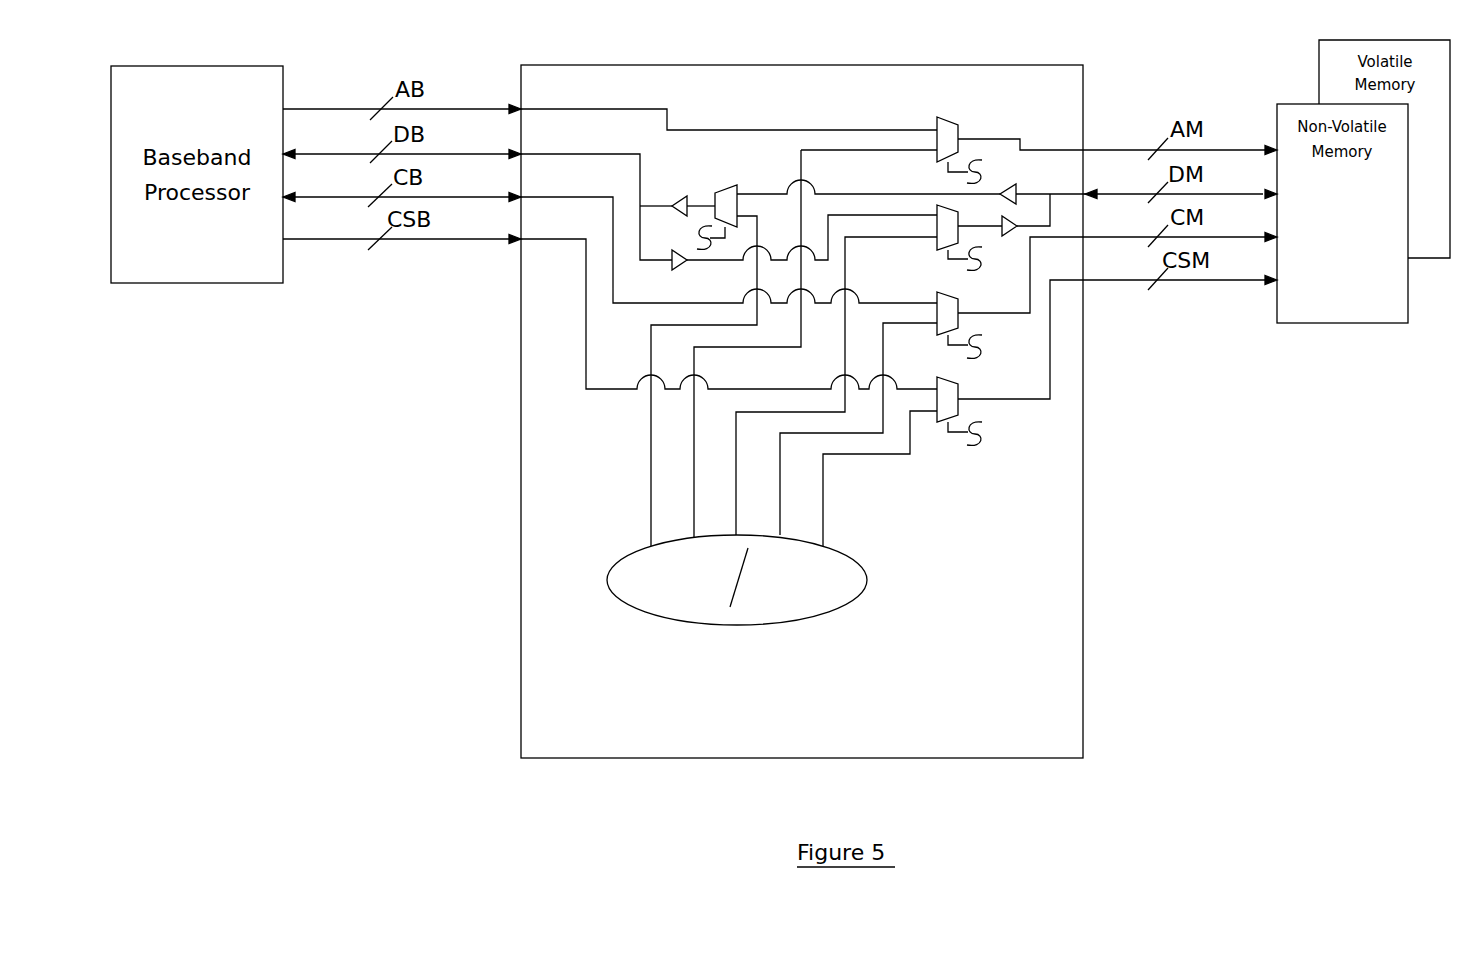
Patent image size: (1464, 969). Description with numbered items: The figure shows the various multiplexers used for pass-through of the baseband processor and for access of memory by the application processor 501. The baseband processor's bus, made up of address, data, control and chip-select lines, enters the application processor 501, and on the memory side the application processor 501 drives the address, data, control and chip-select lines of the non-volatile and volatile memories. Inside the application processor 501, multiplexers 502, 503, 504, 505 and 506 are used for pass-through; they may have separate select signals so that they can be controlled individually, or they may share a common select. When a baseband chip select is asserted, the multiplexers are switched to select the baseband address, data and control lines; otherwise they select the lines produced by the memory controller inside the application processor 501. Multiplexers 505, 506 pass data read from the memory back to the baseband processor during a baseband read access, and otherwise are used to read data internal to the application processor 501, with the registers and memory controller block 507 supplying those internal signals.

The application processor 501 is at (587, 64).
The multiplexer 502 is at (958, 125).
The multiplexer 503 is at (959, 323).
The multiplexer 504 is at (958, 237).
The multiplexer 505 is at (724, 185).
The multiplexer 506 is at (959, 411).
The registers / memory controller 507 is at (867, 580).